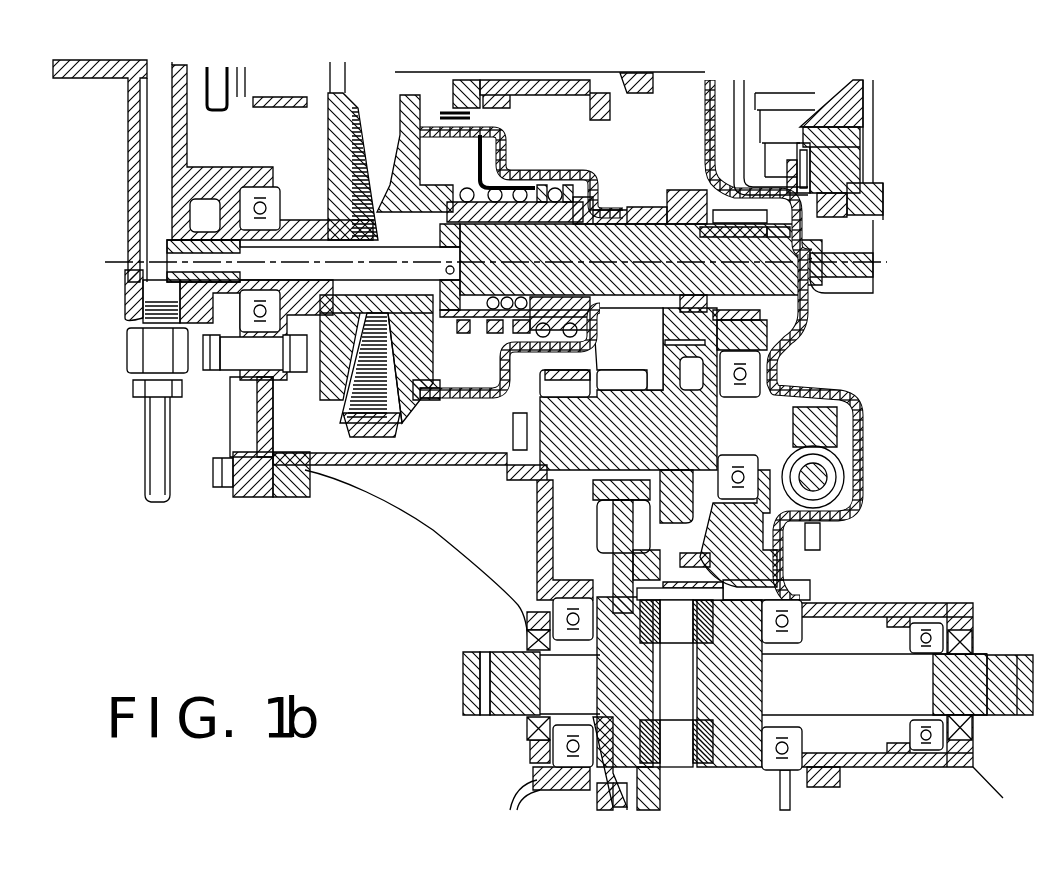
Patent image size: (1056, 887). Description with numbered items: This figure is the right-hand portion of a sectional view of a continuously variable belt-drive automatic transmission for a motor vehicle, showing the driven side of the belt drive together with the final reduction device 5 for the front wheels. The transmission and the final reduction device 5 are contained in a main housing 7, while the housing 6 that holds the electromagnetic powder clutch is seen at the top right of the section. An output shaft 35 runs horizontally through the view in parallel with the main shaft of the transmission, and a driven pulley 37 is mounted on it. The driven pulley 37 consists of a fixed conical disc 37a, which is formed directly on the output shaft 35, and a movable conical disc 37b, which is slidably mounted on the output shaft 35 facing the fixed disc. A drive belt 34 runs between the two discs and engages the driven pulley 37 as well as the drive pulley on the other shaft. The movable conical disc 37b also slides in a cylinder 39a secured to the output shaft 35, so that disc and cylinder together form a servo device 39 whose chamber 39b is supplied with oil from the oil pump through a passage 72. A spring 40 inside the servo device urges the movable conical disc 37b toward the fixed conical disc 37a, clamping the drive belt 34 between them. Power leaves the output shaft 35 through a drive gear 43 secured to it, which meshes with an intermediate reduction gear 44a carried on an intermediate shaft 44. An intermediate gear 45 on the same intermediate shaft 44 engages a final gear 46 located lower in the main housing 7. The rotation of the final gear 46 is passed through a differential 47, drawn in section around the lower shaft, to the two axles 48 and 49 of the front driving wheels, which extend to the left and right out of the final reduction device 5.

The passage 72 is at (150, 205).
The fixed conical disc 37a is at (333, 133).
The servo device 39 is at (513, 148).
The spring 40 is at (530, 188).
The drive gear 43 is at (677, 190).
The output shaft 35 is at (637, 253).
The housing 6 is at (807, 303).
The intermediate reduction gear 44a is at (677, 352).
The intermediate gear 45 is at (627, 380).
The intermediate shaft 44 is at (695, 458).
The chamber 39b is at (457, 368).
The cylinder 39a is at (518, 424).
The movable conical disc 37b is at (412, 420).
The driven pulley 37 is at (320, 388).
The drive belt 34 is at (387, 440).
The main housing 7 is at (547, 532).
The final gear 46 is at (617, 543).
The axle 48 is at (507, 663).
The final reduction device 5 is at (845, 646).
The axle 49 is at (1022, 636).
The differential 47 is at (707, 777).